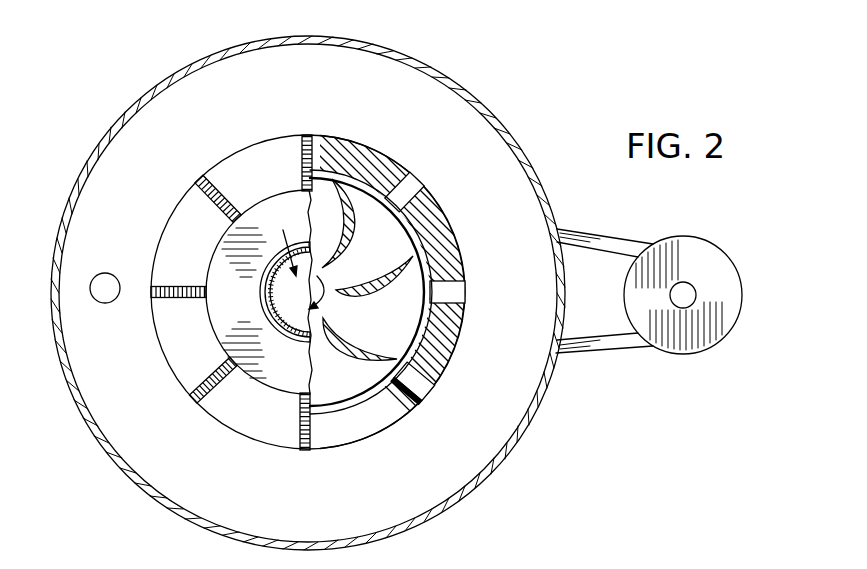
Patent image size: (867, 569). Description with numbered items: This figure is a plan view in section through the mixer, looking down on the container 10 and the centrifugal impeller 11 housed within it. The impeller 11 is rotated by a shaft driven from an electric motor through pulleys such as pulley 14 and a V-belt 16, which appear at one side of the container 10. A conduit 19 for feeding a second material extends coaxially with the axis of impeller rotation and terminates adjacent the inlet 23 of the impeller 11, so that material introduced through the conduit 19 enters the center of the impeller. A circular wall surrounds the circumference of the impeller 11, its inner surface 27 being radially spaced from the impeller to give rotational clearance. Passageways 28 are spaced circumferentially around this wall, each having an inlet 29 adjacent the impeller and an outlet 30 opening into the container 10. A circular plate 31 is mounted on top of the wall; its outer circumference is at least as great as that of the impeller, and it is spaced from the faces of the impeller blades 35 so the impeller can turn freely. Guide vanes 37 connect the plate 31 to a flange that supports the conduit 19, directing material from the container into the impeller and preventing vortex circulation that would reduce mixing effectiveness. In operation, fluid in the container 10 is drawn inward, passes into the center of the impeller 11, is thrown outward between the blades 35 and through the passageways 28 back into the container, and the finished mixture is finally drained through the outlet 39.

The container 10 is at (523, 162).
The centrifugal impeller 11 is at (381, 342).
The pulley 14 is at (705, 250).
The V-belt 16 is at (587, 352).
The conduit 19 is at (265, 300).
The inlet of impeller 23 is at (296, 257).
The inner surface of wall 27 is at (424, 234).
The passageways 28 is at (463, 279).
The inlets of passageways 29 is at (430, 288).
The outlets of passageways 30 is at (466, 297).
The circular plate 31 is at (256, 142).
The impeller blades 35 is at (347, 248).
The guide vanes 37 is at (202, 183).
The outlet 39 is at (106, 272).